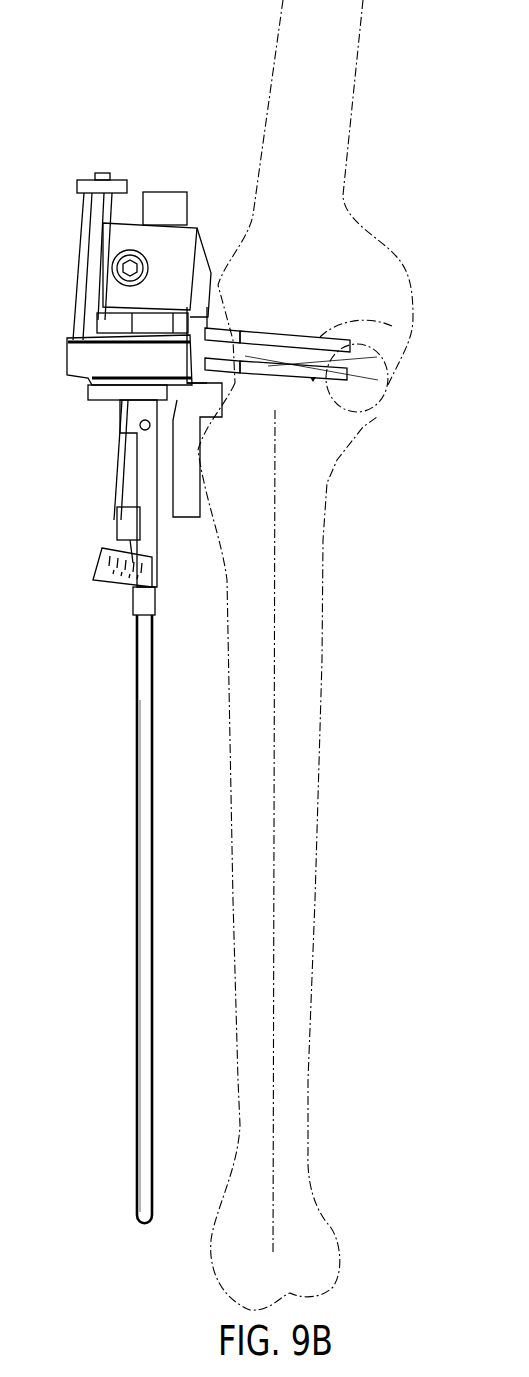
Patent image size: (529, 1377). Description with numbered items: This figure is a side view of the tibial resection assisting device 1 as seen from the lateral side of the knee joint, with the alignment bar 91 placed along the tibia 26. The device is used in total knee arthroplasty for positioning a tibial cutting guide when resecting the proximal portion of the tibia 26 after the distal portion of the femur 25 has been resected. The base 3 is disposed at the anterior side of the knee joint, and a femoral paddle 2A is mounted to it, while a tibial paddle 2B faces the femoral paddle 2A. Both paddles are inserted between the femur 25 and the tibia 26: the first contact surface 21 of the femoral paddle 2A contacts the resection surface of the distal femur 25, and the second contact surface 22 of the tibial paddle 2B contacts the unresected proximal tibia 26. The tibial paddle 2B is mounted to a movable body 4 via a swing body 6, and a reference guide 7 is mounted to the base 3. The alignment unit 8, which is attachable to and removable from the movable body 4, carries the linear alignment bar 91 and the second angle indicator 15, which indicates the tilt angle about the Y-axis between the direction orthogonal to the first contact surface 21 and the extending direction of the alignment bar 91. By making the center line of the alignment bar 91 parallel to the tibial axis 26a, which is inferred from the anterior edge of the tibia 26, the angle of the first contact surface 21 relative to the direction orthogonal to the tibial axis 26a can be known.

The tibial resection assisting device 1 is at (90, 453).
The base 3 is at (183, 250).
The movable body 4 is at (118, 328).
The swing body 6 is at (83, 358).
The reference guide 7 is at (160, 455).
The alignment unit 8 is at (135, 671).
The second angle indicator 15 is at (112, 592).
The first contact surface 21 is at (320, 335).
The femoral paddle 2A is at (350, 348).
The tibial paddle 2B is at (350, 375).
The second contact surface 22 is at (385, 410).
The femur 25 is at (320, 92).
The tibia 26 is at (297, 872).
The tibial axis 26a is at (277, 1148).
The alignment bar 91 is at (138, 957).